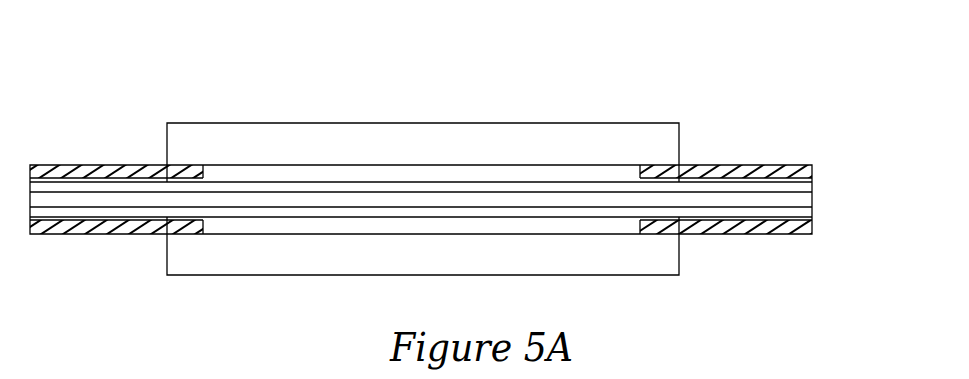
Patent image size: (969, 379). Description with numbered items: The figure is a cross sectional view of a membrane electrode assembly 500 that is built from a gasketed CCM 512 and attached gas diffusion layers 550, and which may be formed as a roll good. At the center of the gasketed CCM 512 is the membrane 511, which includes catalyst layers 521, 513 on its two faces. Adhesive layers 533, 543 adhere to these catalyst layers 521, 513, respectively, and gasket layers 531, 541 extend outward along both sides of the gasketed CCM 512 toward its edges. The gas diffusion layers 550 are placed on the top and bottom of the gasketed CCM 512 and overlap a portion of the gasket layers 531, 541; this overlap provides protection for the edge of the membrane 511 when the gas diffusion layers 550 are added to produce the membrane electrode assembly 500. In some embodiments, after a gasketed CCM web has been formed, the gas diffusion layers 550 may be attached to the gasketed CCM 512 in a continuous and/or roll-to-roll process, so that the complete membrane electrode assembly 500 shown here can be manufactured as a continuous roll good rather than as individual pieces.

The membrane electrode assembly 500 is at (277, 76).
The membrane 511 is at (427, 200).
The gasketed CCM 512 is at (822, 165).
The catalyst layer 513 is at (333, 212).
The catalyst layer 521 is at (342, 190).
The gasket layer 531 is at (117, 165).
The adhesive layer 533 is at (203, 178).
The gasket layer 541 is at (120, 234).
The adhesive layer 543 is at (203, 220).
The gas diffusion layer 550 is at (512, 130).